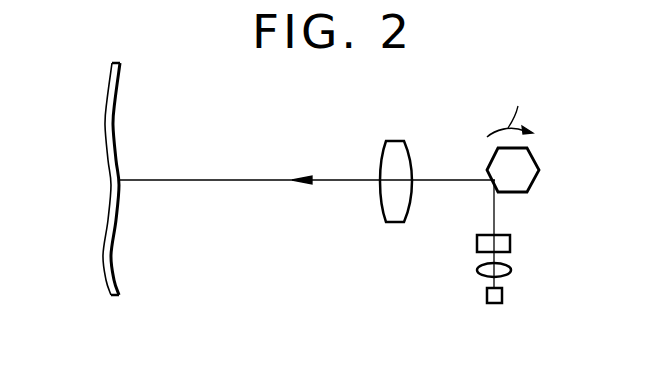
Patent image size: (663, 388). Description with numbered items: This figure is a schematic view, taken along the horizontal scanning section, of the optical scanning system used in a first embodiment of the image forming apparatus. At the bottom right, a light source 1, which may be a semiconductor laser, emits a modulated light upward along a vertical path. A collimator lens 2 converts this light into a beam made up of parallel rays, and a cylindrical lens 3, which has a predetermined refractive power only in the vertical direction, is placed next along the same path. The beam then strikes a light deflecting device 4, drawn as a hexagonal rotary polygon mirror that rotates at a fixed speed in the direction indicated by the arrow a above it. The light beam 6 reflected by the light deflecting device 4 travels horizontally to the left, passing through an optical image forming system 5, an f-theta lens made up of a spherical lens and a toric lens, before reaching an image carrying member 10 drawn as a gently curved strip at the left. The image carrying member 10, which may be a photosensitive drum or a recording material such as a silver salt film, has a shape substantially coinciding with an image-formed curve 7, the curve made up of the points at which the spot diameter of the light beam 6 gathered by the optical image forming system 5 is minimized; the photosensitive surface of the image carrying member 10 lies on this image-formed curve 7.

The light source 1 is at (502, 297).
The collimator lens 2 is at (512, 272).
The cylindrical lens 3 is at (510, 243).
The light deflecting device 4 is at (525, 175).
The optical image forming system 5 is at (400, 157).
The light beam 6 is at (193, 182).
The image-formed curve 7 is at (117, 112).
The image carrying member 10 is at (105, 121).
The arrow a is at (510, 105).